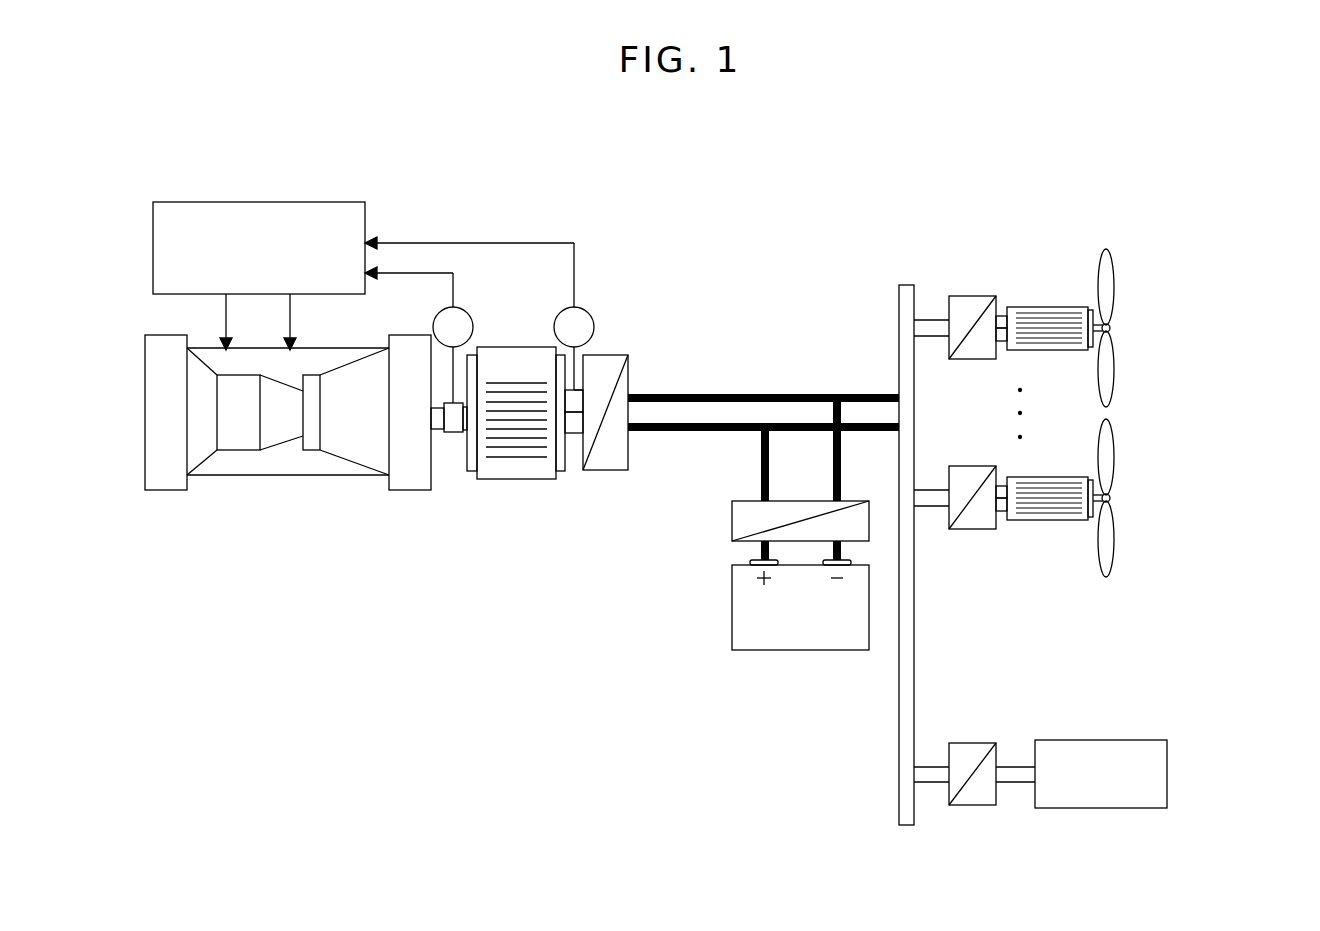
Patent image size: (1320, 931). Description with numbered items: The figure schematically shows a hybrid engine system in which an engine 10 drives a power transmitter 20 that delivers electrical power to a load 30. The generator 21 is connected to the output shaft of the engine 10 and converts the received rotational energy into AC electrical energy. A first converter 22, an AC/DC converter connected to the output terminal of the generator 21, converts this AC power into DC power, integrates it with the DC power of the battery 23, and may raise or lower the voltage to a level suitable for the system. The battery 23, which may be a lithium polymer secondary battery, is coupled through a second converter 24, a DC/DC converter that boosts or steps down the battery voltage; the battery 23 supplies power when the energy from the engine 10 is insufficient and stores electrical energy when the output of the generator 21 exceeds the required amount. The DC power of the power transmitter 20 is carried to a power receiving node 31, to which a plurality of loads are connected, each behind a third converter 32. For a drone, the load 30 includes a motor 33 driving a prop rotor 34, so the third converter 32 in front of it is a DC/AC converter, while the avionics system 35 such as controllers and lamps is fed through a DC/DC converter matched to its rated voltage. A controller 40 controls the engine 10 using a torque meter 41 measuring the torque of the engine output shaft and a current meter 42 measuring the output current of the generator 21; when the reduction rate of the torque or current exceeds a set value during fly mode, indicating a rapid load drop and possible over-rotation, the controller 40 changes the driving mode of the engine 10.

The engine 10 is at (280, 477).
The power transmitter 20 is at (782, 348).
The generator 21 is at (517, 480).
The first converter 22 is at (605, 472).
The battery 23 is at (731, 606).
The second converter 24 is at (731, 521).
The load 30 is at (1088, 397).
The power receiving node 31 is at (914, 655).
The third converter 32 is at (972, 295).
The motor 33 is at (1050, 307).
The prop rotor 34 is at (1115, 273).
The avionics system 35 is at (1103, 740).
The controller 40 is at (318, 203).
The torque meter 41 is at (470, 312).
The current meter 42 is at (592, 312).